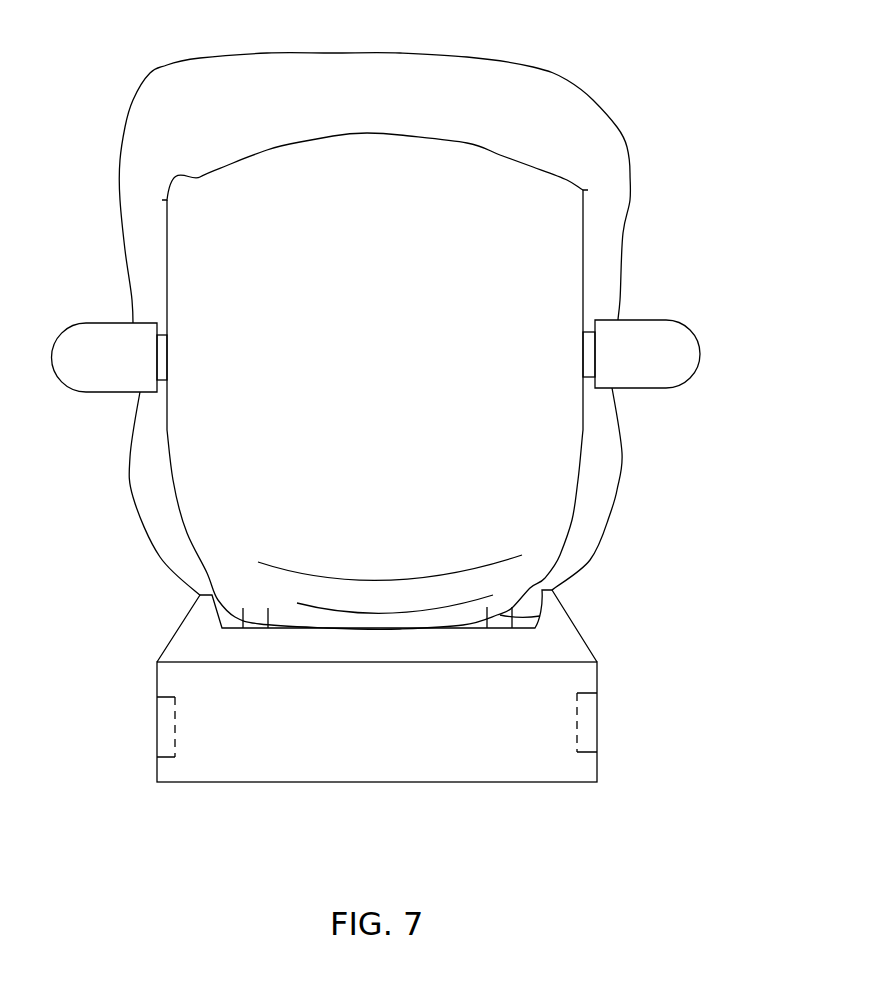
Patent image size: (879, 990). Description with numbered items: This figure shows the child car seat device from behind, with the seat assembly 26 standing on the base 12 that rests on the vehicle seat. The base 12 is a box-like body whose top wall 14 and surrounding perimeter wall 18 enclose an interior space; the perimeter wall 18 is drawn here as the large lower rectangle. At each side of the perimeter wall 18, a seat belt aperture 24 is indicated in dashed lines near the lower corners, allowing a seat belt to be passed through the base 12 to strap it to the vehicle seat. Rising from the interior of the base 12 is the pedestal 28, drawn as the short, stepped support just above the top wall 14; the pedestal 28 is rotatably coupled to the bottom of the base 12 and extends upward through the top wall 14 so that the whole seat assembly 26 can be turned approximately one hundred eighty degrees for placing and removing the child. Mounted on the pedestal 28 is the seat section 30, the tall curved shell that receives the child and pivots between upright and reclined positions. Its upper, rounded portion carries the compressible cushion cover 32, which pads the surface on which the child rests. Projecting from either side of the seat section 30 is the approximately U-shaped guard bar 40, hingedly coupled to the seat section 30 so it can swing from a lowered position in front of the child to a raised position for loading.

The base 12 is at (437, 732).
The top wall 14 is at (557, 637).
The perimeter wall 18 is at (403, 745).
The seat belt aperture 24 is at (173, 783).
The seat assembly 26 is at (580, 90).
The pedestal 28 is at (560, 610).
The seat section 30 is at (227, 517).
The cushion cover 32 is at (600, 153).
The guard bar 40 is at (678, 358).